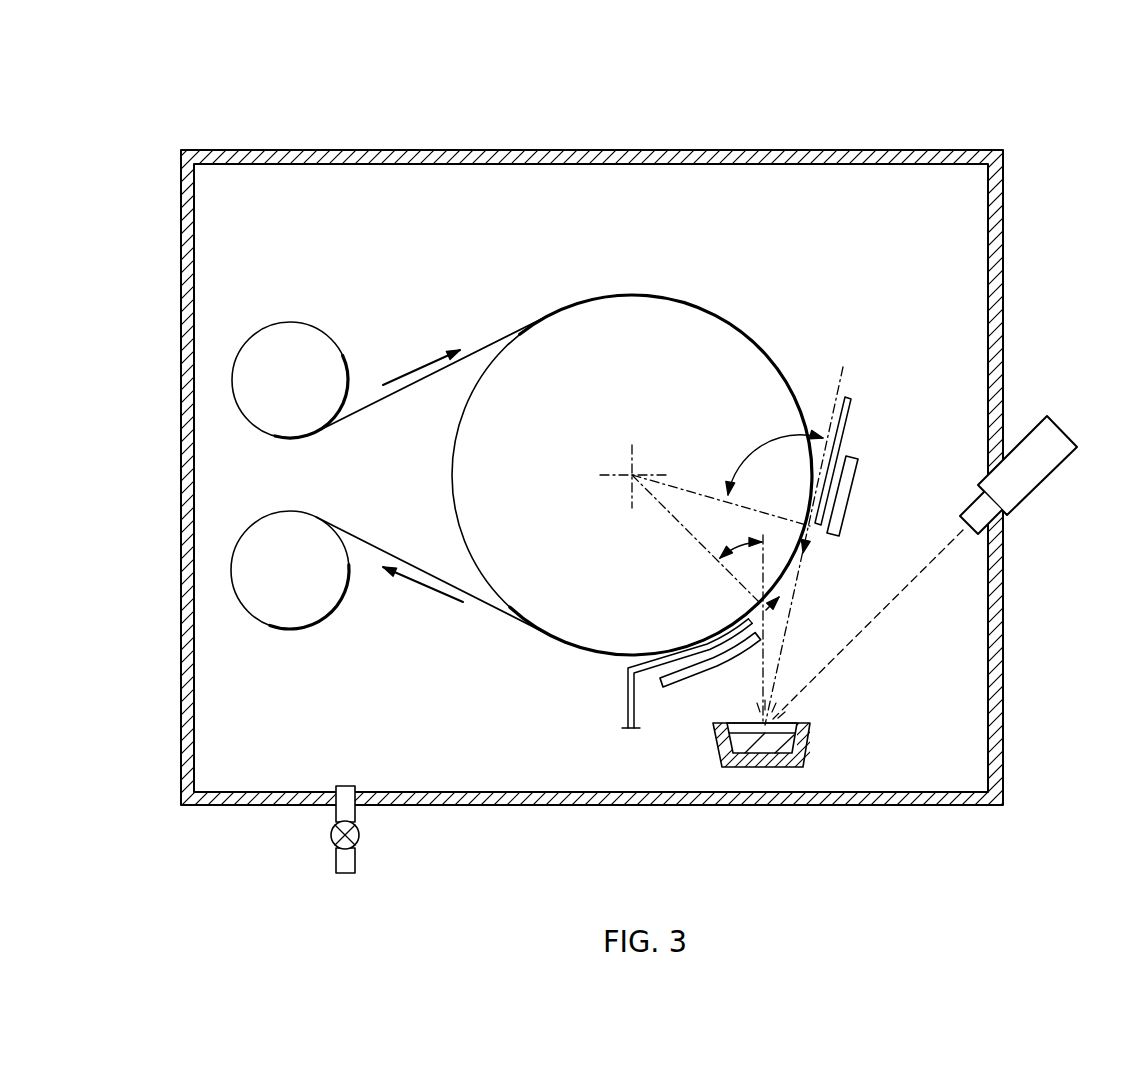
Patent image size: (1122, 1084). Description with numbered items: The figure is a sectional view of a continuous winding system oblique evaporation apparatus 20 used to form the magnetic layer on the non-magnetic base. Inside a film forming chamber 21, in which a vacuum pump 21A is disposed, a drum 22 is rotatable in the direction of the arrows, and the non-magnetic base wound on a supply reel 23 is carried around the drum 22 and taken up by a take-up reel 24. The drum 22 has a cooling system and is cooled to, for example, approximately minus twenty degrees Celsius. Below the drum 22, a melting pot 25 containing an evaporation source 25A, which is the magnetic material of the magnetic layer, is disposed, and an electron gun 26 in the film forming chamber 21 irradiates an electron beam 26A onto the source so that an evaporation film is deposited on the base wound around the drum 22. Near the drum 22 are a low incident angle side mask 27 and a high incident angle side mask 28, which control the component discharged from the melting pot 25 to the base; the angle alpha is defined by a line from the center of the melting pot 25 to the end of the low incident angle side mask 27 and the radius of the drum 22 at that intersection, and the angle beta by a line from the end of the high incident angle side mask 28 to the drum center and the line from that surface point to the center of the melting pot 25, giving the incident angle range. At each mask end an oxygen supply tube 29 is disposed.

The evaporation apparatus 20 is at (1030, 100).
The film forming chamber 21 is at (817, 159).
The vacuum pump 21A is at (360, 834).
The drum 22 is at (637, 306).
The supply reel 23 is at (289, 333).
The take-up reel 24 is at (288, 621).
The melting pot 25 is at (806, 750).
The evaporation source 25A is at (820, 719).
The electron gun 26 is at (1042, 465).
The electron beam 26A is at (905, 603).
The low incident angle side mask 27 is at (677, 685).
The high incident angle side mask 28 is at (858, 472).
The oxygen supply tube 29 is at (855, 400).